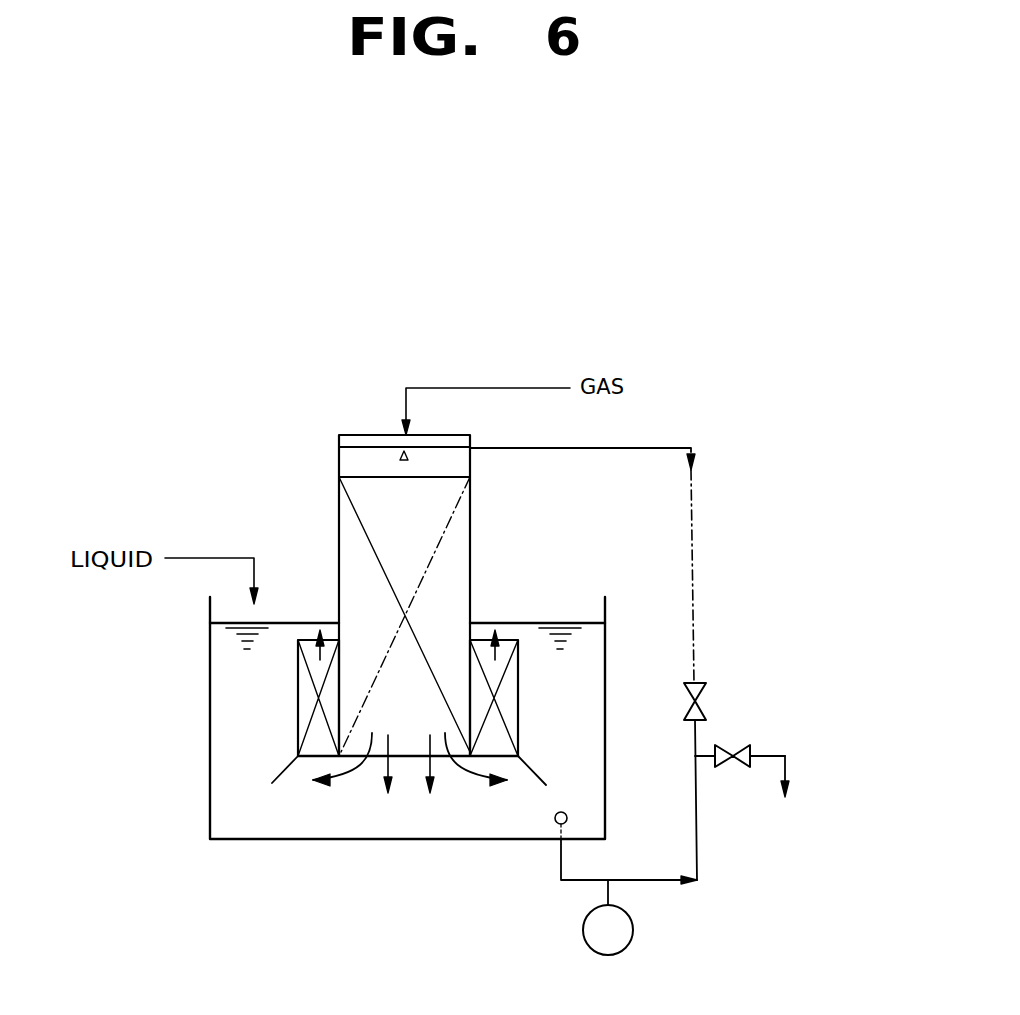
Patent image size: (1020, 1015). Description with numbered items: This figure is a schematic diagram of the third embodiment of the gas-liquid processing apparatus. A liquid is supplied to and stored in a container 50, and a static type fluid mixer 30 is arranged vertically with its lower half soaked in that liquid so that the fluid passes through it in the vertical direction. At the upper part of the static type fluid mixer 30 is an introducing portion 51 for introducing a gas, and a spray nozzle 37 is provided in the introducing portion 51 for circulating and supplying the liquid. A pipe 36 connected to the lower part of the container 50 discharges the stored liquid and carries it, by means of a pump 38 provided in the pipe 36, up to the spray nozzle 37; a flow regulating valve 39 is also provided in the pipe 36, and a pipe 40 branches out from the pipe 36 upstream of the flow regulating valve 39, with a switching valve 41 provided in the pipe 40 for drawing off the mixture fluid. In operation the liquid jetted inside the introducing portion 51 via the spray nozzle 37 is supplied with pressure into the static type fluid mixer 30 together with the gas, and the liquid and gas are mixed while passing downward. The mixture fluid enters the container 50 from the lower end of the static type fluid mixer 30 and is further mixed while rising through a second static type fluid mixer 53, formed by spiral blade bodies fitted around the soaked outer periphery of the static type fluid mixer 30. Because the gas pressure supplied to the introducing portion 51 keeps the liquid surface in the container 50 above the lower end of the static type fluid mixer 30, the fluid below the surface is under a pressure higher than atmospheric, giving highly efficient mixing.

The static type fluid mixer 30 is at (470, 530).
The pipe 36 is at (563, 858).
The spray nozzle 37 is at (408, 455).
The pump 38 is at (632, 940).
The flow regulating valve 39 is at (704, 700).
The pipe 40 is at (787, 768).
The switching valve 41 is at (733, 750).
The container 50 is at (210, 714).
The introducing portion 51 is at (338, 447).
The static type fluid mixer 53 is at (518, 672).